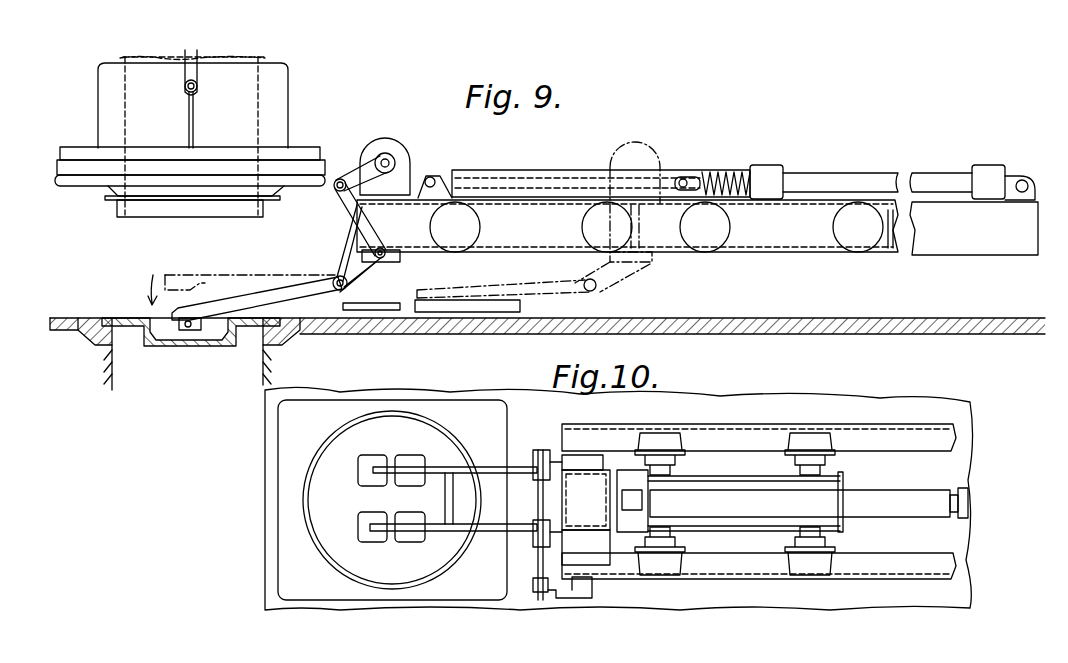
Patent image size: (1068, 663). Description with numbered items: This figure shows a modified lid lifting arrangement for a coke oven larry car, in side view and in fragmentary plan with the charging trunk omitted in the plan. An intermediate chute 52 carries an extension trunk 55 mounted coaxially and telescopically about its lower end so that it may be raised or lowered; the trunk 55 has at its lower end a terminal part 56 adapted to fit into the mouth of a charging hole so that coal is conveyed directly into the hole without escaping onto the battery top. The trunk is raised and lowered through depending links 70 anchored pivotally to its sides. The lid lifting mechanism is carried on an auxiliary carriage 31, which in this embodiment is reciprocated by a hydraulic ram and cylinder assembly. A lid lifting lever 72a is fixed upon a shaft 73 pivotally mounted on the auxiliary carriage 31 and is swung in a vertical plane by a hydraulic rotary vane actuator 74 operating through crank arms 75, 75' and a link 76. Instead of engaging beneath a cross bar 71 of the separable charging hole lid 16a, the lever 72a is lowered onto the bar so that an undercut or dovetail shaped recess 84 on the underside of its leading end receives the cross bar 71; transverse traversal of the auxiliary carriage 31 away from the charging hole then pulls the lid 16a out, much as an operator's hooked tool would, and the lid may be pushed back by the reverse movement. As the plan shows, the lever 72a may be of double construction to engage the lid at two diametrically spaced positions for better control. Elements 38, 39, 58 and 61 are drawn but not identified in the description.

In FIG. 9, the charging hole lid 16a is at (141, 322).
In FIG. 10, the charging hole lid 16a is at (410, 576).
In FIG. 9, the auxiliary carriage 31 is at (651, 233).
In FIG. 10, the auxiliary carriage 31 is at (850, 472).
In FIG. 9, the hydraulic cylinder 38 is at (1022, 246).
In FIG. 10, the hydraulic cylinder 38 is at (918, 568).
In FIG. 10, the frame beam 39 is at (952, 450).
In FIG. 9, the intermediate chute 52 is at (250, 57).
In FIG. 9, the extension trunk 55 is at (255, 112).
In FIG. 9, the terminal part 56 is at (193, 213).
In FIG. 9, the flange support 58 is at (92, 190).
In FIG. 9, the flange 61 is at (60, 152).
In FIG. 9, the depending link 70 is at (196, 60).
In FIG. 10, the cross bar 71 is at (387, 516).
In FIG. 9, the lid lifting lever 72a is at (266, 298).
In FIG. 10, the lid lifting lever 72a is at (518, 466).
In FIG. 9, the shaft 73 is at (339, 276).
In FIG. 10, the shaft 73 is at (545, 562).
In FIG. 9, the hydraulic rotary vane actuator 74 is at (398, 148).
In FIG. 10, the hydraulic rotary vane actuator 74 is at (598, 562).
In FIG. 9, the crank arm 75 is at (361, 156).
In FIG. 10, the crank arm 75 is at (585, 592).
In FIG. 9, the crank arm 75' is at (388, 271).
In FIG. 9, the link 76 is at (367, 238).
In FIG. 10, the link 76 is at (538, 590).
In FIG. 9, the undercut recess 84 is at (189, 330).